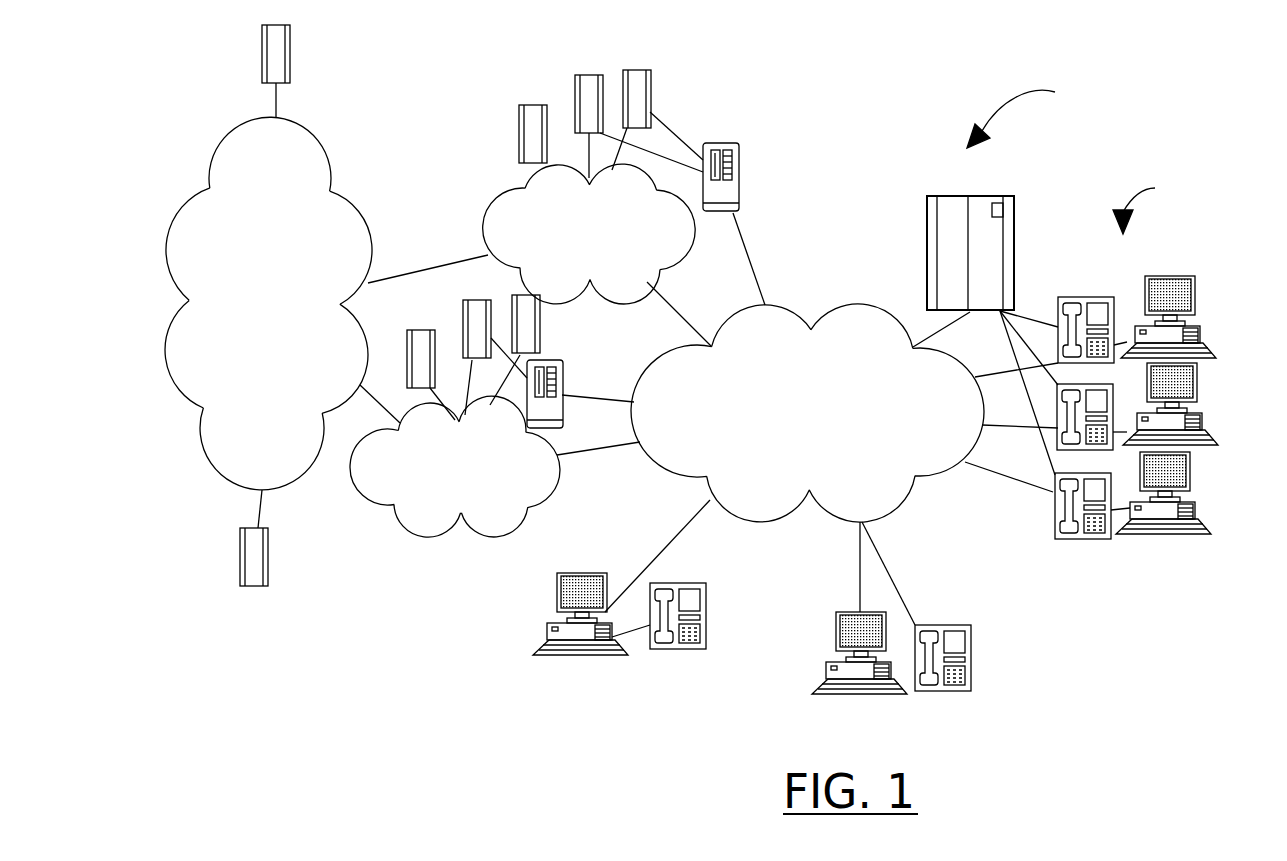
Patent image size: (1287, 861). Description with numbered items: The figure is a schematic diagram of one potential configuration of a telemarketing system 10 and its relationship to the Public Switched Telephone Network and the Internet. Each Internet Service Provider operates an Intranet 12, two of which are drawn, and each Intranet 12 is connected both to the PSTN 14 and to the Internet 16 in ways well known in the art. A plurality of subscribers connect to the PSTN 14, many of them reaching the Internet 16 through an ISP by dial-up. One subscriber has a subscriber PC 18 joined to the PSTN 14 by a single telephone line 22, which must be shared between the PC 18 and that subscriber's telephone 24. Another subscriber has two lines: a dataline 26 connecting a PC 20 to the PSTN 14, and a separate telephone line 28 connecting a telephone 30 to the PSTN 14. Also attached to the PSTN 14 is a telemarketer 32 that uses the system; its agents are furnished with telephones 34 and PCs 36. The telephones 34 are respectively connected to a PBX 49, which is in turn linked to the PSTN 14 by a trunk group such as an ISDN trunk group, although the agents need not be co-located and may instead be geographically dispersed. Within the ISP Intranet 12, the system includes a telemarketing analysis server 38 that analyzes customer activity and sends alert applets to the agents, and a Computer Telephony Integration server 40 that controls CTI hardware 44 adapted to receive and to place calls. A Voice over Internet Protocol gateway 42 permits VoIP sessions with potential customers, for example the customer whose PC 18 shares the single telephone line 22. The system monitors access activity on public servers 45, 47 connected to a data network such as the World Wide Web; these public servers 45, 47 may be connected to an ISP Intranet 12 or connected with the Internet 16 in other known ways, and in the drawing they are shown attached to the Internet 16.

The system 10 is at (1032, 116).
The Intranet 12 is at (508, 192).
The Public Switched Telephone Network (PSTN) 14 is at (850, 305).
The Internet 16 is at (330, 165).
The subscriber PC 18 is at (572, 655).
The PC 20 is at (855, 697).
The telephone line 22 is at (678, 548).
The telephone 24 is at (685, 648).
The dataline 26 is at (840, 590).
The telephone line 28 is at (875, 572).
The telephone 30 is at (965, 672).
The telemarketer 32 is at (1152, 205).
The telephones 34 is at (1058, 320).
The PCs 36 is at (1158, 285).
The telemarketing analysis server (TMA) 38 is at (535, 105).
The Computer Telephony Integration (CTI) server 40 is at (575, 85).
The Voice over Internet Protocol (VoIP) gateway 42 is at (648, 92).
The CTI hardware 44 is at (740, 188).
The public server 45 is at (270, 572).
The public server 47 is at (290, 62).
The PBX 49 is at (995, 202).